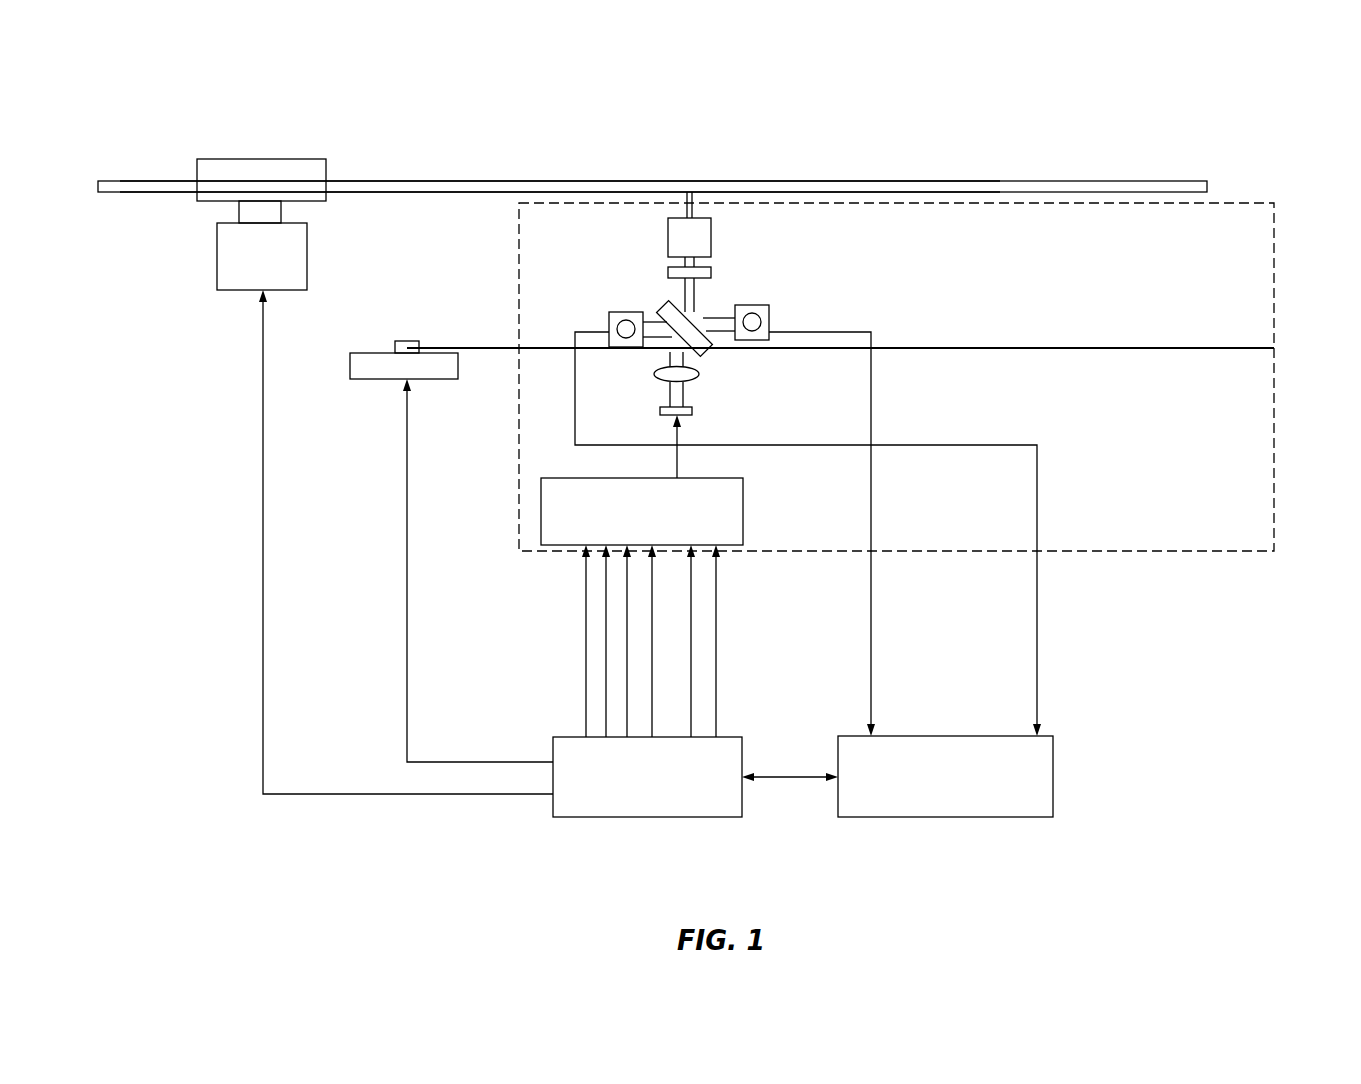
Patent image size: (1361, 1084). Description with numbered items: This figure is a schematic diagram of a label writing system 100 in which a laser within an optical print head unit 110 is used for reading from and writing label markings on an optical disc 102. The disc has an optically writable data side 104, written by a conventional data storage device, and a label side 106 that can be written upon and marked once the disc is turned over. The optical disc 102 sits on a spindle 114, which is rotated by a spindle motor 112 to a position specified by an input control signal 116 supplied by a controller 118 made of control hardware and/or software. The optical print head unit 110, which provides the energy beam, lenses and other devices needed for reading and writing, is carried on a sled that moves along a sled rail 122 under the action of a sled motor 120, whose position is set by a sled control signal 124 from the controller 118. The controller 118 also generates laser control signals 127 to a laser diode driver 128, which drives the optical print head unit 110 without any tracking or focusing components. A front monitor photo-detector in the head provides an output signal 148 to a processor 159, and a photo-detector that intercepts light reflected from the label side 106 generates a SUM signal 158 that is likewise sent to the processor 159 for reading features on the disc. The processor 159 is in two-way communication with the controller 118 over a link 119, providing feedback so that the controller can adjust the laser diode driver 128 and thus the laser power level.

The label writing system 100 is at (496, 140).
The optical disc 102 is at (78, 182).
The optically writable data side 104 is at (138, 180).
The label side 106 is at (173, 193).
The optical print head unit 110 is at (1274, 247).
The spindle motor 112 is at (217, 272).
The spindle 114 is at (265, 158).
The input control signal 116 is at (262, 363).
The controller 118 is at (742, 745).
The link 119 is at (793, 780).
The sled motor 120 is at (368, 380).
The sled rail 122 is at (495, 350).
The sled control signal 124 is at (407, 498).
The laser control signals 127 is at (568, 658).
The laser diode driver 128 is at (744, 513).
The output signal 148 is at (1036, 632).
The SUM signal 158 is at (871, 620).
The processor 159 is at (1053, 780).